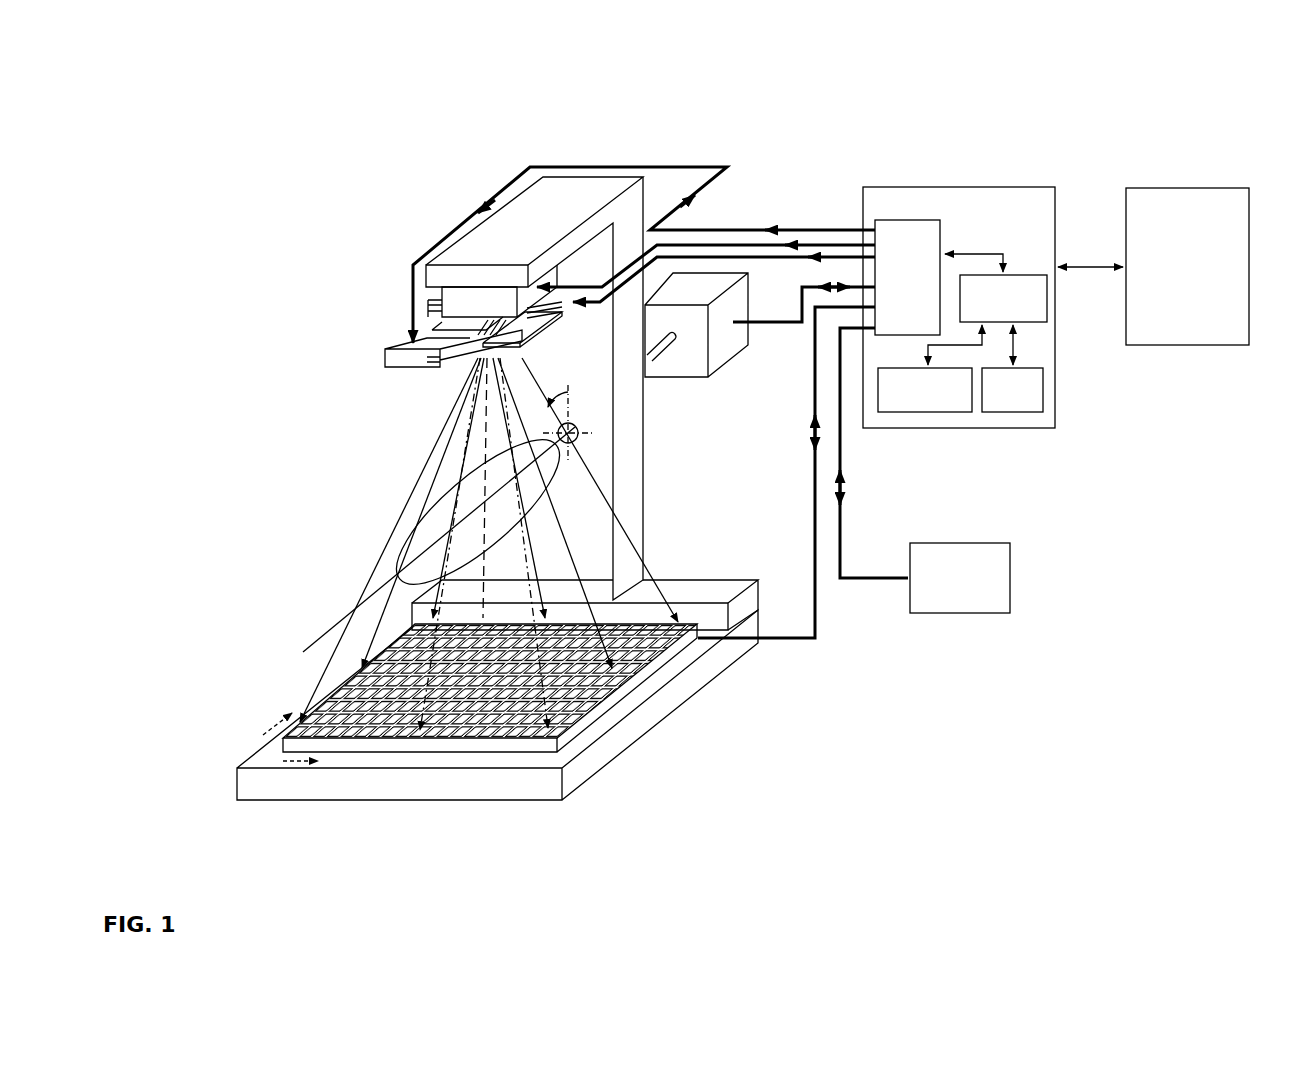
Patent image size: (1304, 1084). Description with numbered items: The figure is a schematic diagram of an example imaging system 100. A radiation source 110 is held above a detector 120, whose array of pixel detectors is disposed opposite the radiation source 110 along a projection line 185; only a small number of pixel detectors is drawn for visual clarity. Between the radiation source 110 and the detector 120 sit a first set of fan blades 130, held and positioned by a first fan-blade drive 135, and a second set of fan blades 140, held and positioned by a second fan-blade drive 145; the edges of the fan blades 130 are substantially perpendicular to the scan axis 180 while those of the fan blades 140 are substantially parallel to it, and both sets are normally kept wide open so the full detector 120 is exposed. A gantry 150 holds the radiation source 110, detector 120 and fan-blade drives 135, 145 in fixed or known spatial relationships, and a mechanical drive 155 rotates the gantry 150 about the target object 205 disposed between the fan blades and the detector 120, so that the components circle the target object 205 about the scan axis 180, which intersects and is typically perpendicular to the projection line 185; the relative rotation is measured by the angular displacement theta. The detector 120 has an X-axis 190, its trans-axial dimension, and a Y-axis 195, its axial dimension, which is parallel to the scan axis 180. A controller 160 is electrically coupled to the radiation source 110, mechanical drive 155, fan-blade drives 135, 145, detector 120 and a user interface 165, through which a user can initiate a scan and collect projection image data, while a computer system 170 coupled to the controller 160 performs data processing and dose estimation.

The imaging system 100 is at (140, 160).
The radiation source 110 is at (452, 305).
The detector 120 is at (560, 742).
The first set of fan blades 130 is at (522, 336).
The first fan-blade drive 135 is at (397, 358).
The second set of fan blades 140 is at (453, 335).
The second fan-blade drive 145 is at (563, 307).
The gantry 150 is at (641, 541).
The mechanical drive 155 is at (686, 360).
The controller 160 is at (959, 307).
The user interface 165 is at (940, 616).
The computer system 170 is at (1153, 266).
The scan axis 180 is at (343, 620).
The projection line 185 is at (482, 480).
The X-axis 190 is at (340, 768).
The Y-axis 195 is at (263, 703).
The target object 205 is at (530, 487).